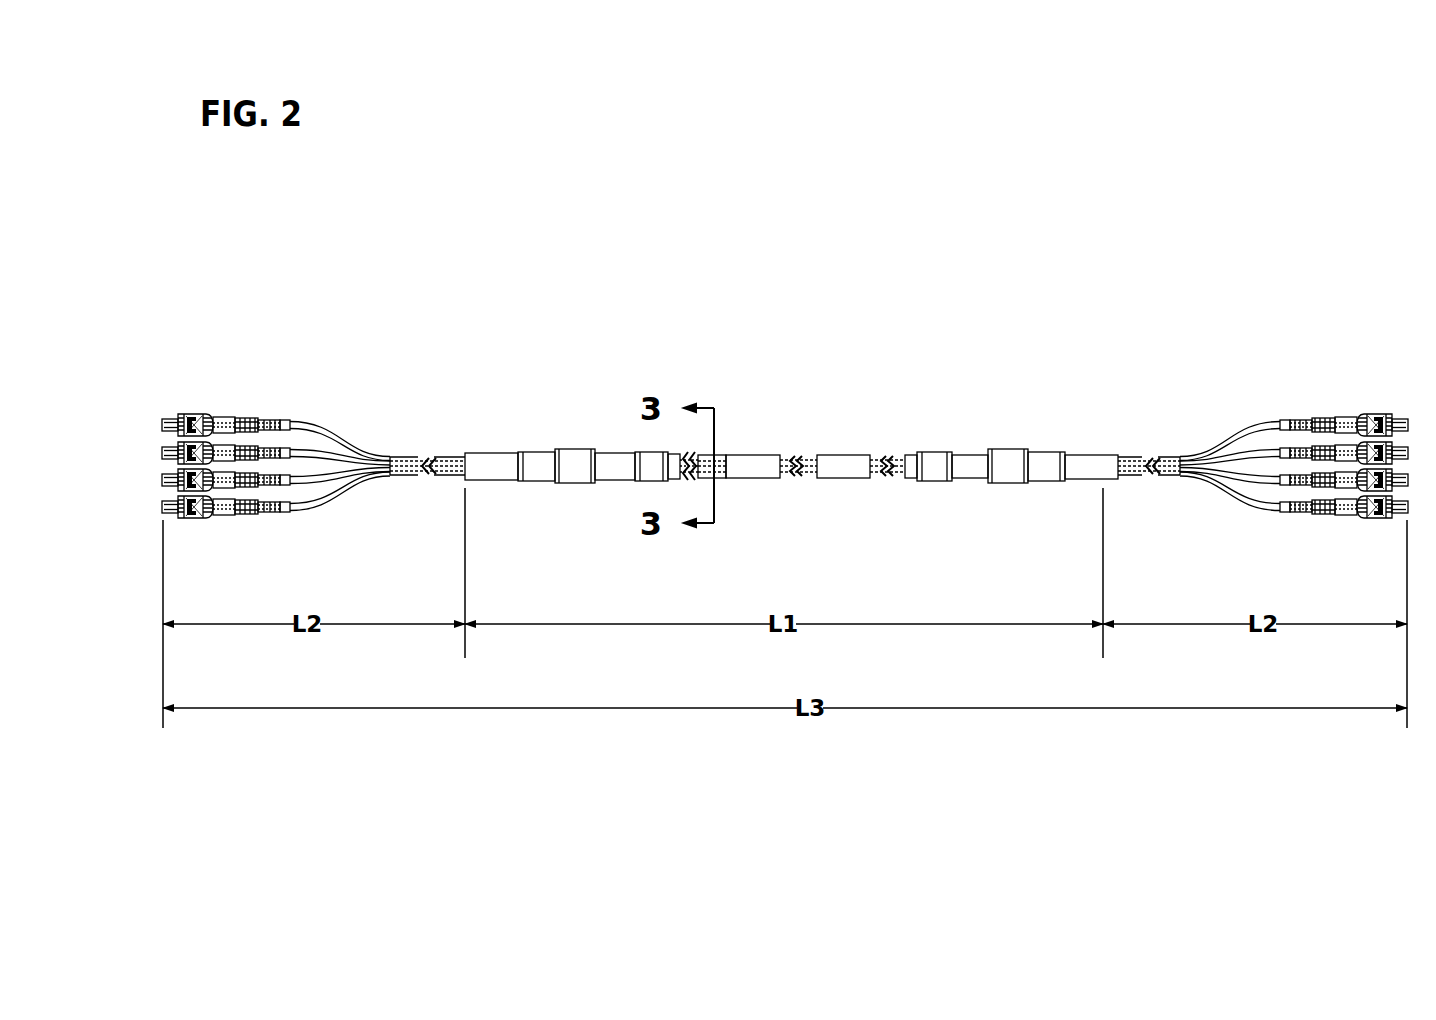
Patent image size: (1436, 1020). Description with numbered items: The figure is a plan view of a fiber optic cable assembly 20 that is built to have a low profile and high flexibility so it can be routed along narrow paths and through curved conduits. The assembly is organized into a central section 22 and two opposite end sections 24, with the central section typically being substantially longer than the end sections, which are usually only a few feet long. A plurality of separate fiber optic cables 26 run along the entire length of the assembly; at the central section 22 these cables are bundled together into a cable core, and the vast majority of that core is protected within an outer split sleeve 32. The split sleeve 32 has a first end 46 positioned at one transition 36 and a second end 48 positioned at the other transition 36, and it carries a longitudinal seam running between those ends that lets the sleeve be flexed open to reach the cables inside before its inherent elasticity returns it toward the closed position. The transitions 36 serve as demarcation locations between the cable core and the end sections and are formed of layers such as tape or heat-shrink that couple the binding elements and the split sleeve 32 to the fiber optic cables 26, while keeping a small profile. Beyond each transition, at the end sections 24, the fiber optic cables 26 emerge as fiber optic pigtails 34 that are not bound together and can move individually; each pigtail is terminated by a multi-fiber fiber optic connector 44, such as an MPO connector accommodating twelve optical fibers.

The fiber optic cable assembly 20 is at (621, 283).
The central section 22 is at (752, 396).
The end sections 24 is at (242, 363).
The fiber optic cables 26 is at (331, 437).
The split sleeve 32 is at (720, 455).
The fiber optic pigtails 34 is at (299, 418).
The transitions 36 is at (574, 447).
The multi-fiber fiber optic connectors 44 is at (186, 414).
The first end 46 is at (553, 450).
The second end 48 is at (1030, 452).